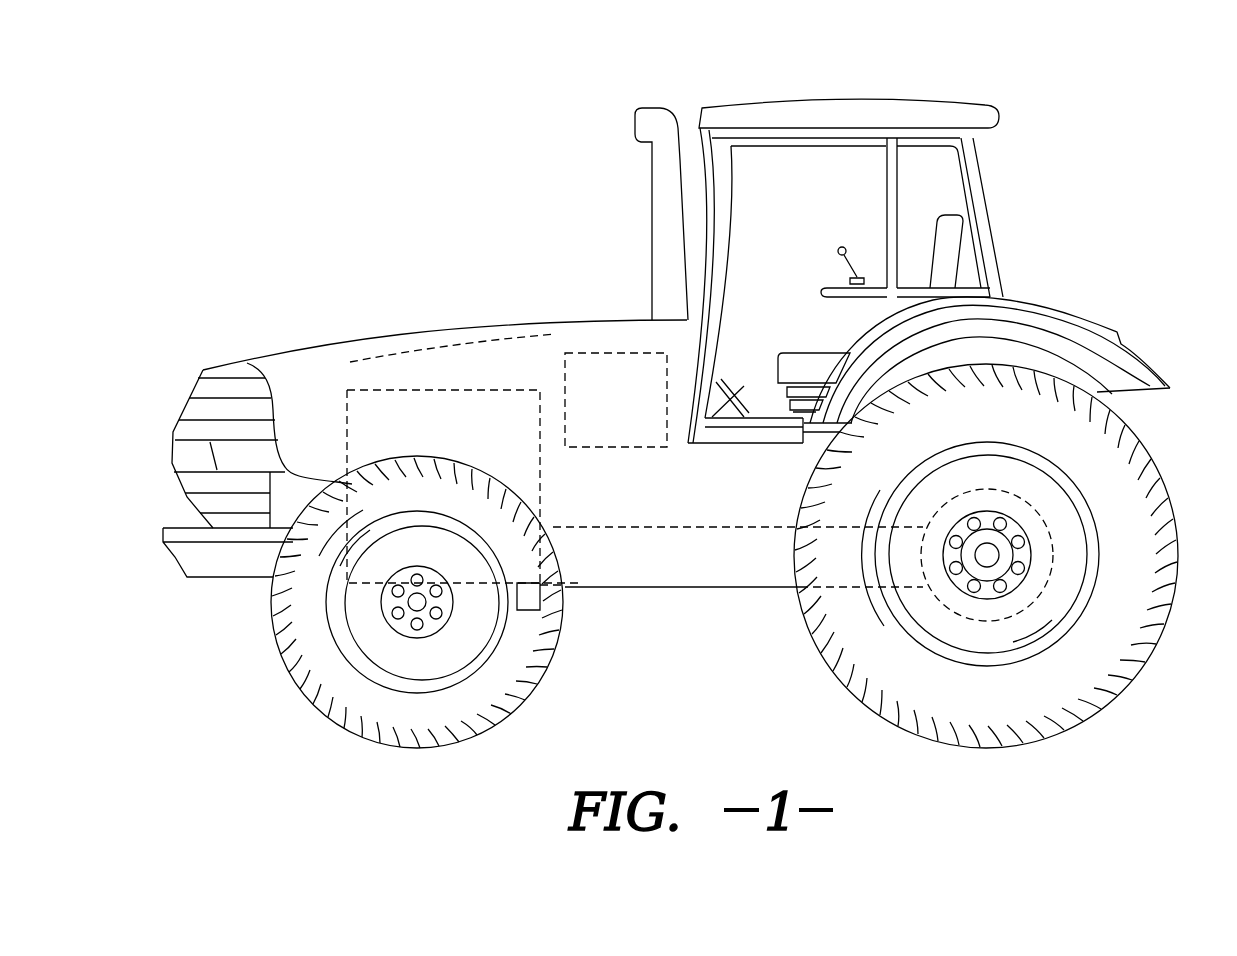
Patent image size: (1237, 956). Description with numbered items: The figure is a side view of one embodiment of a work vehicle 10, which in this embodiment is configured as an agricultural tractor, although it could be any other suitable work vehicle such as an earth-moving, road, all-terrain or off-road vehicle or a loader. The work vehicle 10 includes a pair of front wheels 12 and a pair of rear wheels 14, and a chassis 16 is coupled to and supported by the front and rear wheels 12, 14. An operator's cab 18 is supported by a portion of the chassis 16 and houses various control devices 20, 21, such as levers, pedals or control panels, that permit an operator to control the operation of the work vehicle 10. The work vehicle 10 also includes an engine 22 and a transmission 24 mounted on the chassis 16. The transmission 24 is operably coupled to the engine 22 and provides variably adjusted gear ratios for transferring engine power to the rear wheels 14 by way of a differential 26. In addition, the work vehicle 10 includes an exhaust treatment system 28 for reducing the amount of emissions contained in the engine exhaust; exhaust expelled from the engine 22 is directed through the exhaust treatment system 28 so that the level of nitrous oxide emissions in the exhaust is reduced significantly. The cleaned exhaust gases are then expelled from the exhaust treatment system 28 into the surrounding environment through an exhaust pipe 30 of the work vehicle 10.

The work vehicle 10 is at (352, 232).
The front wheels 12 is at (268, 617).
The rear wheels 14 is at (1015, 556).
The chassis 16 is at (628, 587).
The operator's cab 18 is at (989, 226).
The control device 20 is at (840, 247).
The control device 21 is at (738, 400).
The engine 22 is at (418, 390).
The transmission 24 is at (688, 525).
The differential 26 is at (1053, 556).
The exhaust treatment system 28 is at (600, 352).
The exhaust pipe 30 is at (663, 197).